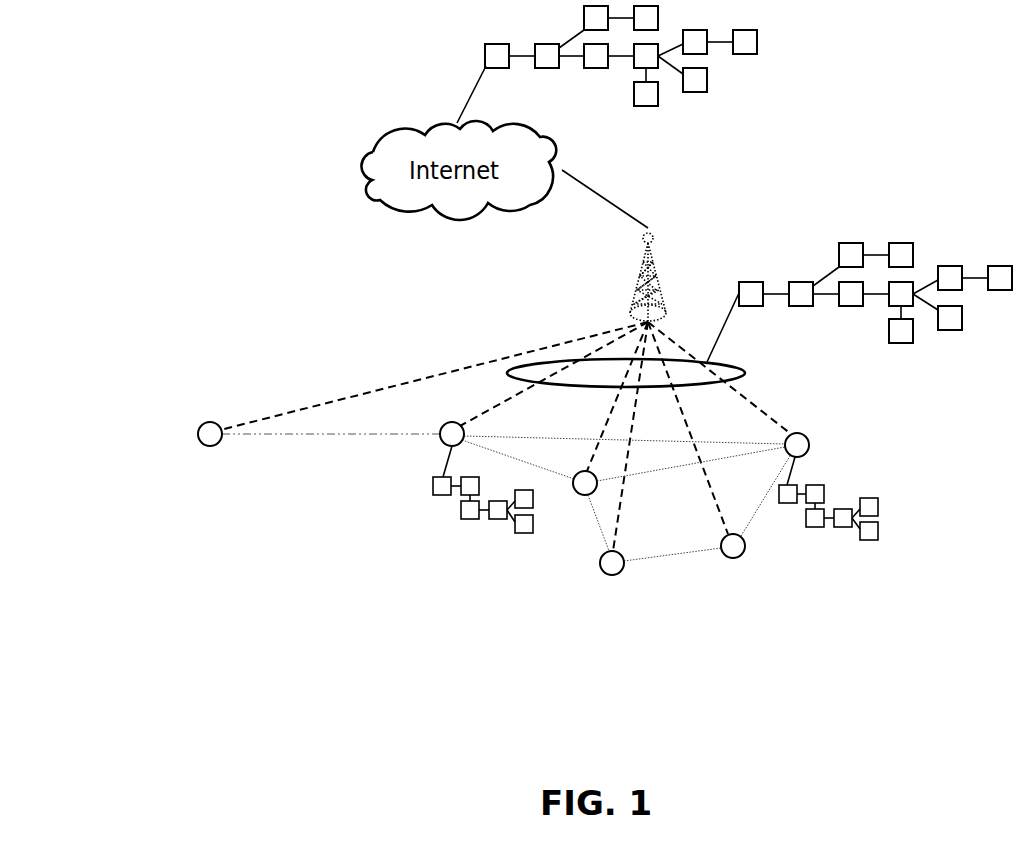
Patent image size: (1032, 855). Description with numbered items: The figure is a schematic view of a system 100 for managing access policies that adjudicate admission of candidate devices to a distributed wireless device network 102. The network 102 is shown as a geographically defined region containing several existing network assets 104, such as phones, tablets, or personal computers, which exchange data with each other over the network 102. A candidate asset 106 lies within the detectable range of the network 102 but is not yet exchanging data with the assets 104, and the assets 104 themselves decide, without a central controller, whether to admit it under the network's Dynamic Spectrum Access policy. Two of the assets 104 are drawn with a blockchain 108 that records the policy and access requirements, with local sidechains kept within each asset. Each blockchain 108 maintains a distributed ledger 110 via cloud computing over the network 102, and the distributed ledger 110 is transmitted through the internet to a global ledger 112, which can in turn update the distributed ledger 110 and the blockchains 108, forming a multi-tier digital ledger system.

The system 100 is at (246, 222).
The distributed wireless device network 102 is at (618, 290).
The existing network asset 104 is at (443, 443).
The candidate asset 106 is at (212, 446).
The blockchain 108 is at (477, 520).
The distributed ledger 110 is at (953, 313).
The global ledger 112 is at (697, 80).